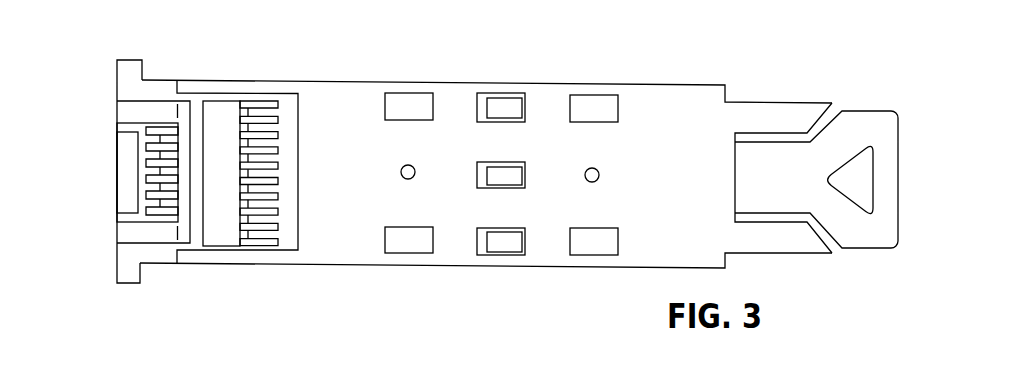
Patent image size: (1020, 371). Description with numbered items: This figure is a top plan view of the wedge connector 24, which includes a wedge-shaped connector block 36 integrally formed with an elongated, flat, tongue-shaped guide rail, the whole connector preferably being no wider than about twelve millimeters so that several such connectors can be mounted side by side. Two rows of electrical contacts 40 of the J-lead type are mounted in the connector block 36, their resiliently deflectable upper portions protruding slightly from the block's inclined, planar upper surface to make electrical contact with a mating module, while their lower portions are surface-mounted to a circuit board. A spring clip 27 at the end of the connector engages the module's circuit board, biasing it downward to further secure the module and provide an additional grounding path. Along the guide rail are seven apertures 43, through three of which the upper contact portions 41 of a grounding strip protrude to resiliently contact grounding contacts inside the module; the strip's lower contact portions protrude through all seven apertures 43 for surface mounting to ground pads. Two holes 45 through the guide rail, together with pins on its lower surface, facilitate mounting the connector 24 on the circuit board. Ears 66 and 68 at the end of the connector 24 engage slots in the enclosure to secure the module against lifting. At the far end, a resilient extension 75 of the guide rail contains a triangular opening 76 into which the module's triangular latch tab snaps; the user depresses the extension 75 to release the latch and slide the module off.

The connector 24 is at (362, 272).
The spring clip 27 is at (133, 142).
The connector block 36 is at (223, 250).
The electrical contacts 40 is at (146, 196).
The upper contact portions 41 is at (507, 102).
The apertures 43 is at (409, 98).
The holes 45 is at (401, 172).
The ear 66 is at (128, 283).
The ear 68 is at (130, 65).
The resilient extension 75 is at (862, 243).
The triangular opening 76 is at (862, 152).